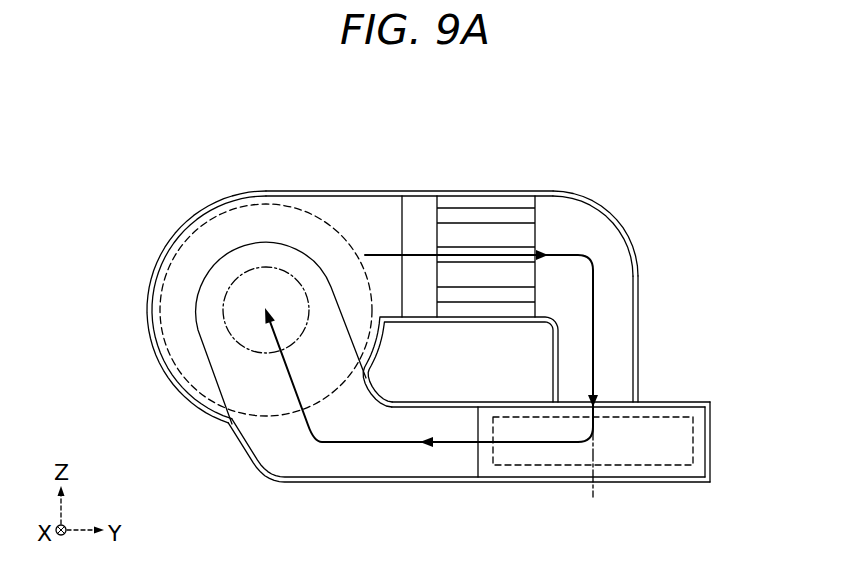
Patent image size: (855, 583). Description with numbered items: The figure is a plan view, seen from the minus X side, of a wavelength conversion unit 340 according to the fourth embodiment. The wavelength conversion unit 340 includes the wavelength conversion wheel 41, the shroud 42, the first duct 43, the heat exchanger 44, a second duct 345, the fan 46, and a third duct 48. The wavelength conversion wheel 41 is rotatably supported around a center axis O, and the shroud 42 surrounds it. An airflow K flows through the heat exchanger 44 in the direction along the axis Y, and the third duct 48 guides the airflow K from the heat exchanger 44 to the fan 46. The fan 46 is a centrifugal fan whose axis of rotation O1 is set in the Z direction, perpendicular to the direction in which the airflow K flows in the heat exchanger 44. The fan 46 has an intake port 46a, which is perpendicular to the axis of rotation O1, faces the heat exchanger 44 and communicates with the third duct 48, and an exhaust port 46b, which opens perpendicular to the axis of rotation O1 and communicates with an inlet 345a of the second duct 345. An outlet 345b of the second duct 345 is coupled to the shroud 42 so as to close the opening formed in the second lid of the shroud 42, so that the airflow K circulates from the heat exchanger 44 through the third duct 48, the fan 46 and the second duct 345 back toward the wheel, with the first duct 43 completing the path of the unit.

The wavelength conversion unit 340 is at (637, 184).
The wavelength conversion wheel 41 is at (180, 235).
The shroud 42 is at (262, 191).
The first duct 43 is at (418, 205).
The heat exchanger 44 is at (468, 213).
The fan 46 is at (711, 431).
The intake port 46a is at (612, 402).
The exhaust port 46b is at (479, 461).
The third duct 48 is at (640, 267).
The second duct 345 is at (380, 484).
The inlet 345a is at (480, 447).
The outlet 345b is at (196, 333).
The center axis O is at (266, 310).
The axis of rotation O1 is at (593, 492).
The airflow K is at (549, 250).